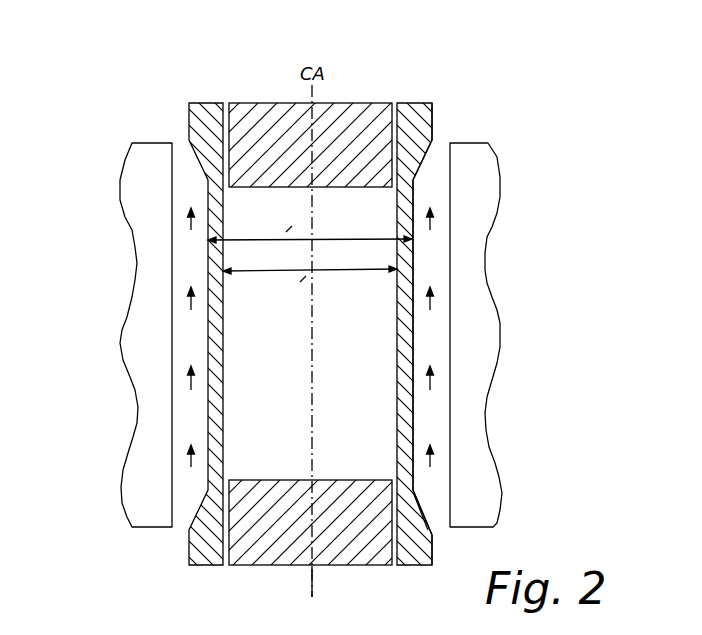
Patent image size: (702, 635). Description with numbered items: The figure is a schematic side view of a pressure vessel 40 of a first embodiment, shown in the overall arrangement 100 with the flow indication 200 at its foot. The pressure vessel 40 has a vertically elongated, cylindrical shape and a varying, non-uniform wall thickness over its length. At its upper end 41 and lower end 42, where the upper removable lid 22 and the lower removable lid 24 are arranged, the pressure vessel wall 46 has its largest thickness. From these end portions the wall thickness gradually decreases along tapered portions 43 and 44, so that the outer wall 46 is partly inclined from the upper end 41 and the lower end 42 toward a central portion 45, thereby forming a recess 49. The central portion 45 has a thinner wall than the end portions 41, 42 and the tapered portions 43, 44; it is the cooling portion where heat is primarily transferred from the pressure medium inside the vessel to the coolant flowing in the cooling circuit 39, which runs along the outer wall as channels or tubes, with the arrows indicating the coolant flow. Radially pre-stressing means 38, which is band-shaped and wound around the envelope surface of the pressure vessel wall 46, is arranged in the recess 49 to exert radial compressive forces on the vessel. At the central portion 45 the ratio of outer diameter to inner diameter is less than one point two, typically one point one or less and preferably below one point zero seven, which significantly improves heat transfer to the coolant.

The gas cooling assembly 100 is at (357, 71).
The upper removable lid 22 is at (290, 101).
The lower removable lid 24 is at (278, 566).
The pressure vessel 40 is at (410, 101).
The upper end 41 is at (428, 125).
The tapered portion 43 is at (413, 169).
The central portion 45 is at (413, 255).
The pressure vessel wall 46 is at (414, 352).
The recess 49 is at (418, 503).
The tapered portion 44 is at (427, 514).
The lower end 42 is at (433, 552).
The radially pre-stressing means 38 is at (135, 405).
The cooling circuit 39 is at (190, 270).
The flow direction 200 is at (365, 600).